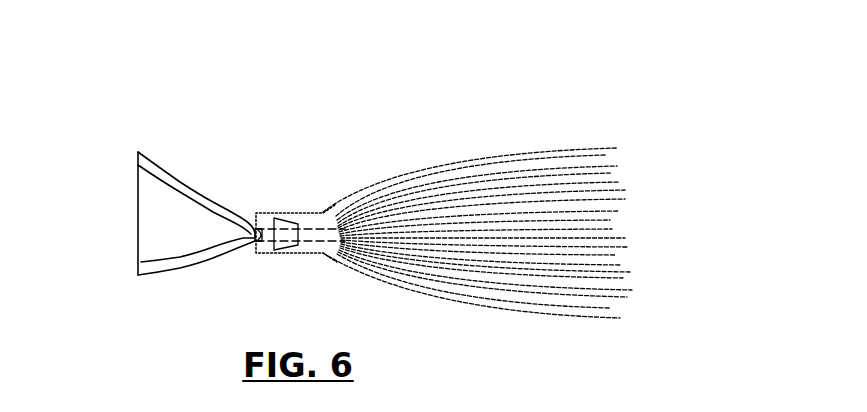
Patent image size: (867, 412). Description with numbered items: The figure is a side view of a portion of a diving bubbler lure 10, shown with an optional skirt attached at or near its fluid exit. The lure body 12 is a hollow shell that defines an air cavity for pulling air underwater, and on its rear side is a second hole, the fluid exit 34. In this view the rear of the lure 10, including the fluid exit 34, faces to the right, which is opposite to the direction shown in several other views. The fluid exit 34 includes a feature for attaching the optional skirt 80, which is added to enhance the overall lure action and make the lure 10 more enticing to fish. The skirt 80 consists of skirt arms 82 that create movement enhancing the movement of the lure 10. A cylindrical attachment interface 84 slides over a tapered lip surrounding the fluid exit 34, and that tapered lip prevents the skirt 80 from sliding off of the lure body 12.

The lure 10 is at (158, 100).
The lure body 12 is at (152, 224).
The fluid exit 34 is at (253, 233).
The skirt 80 is at (368, 152).
The skirt arms 82 is at (448, 181).
The cylindrical attachment interface 84 is at (302, 256).